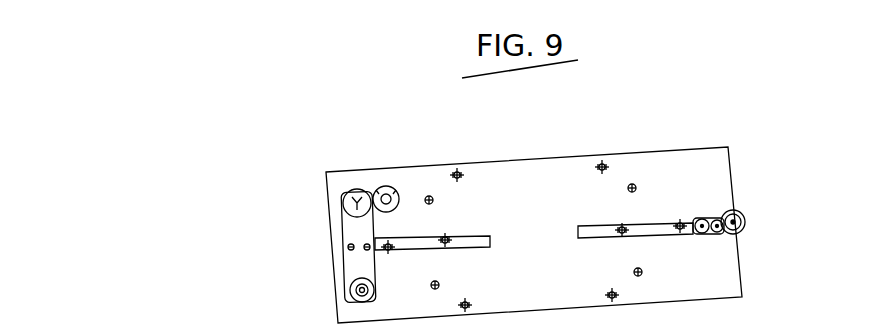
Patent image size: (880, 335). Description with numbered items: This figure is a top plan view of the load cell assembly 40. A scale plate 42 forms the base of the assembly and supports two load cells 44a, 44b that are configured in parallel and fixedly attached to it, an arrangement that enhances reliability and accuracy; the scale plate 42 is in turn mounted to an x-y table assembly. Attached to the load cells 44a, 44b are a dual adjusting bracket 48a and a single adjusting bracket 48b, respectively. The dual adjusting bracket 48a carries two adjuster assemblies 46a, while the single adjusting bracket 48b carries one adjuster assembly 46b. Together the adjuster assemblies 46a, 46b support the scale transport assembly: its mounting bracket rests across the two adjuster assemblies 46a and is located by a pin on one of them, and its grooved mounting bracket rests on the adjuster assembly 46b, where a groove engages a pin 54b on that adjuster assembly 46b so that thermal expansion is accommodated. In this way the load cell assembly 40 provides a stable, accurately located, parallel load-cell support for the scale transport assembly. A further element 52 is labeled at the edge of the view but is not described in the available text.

The load cell assembly 40 is at (772, 146).
The scale plate 42 is at (657, 168).
The load cell 44a is at (422, 238).
The load cell 44b is at (647, 225).
The adjuster assemblies 46a is at (358, 197).
The adjuster assembly 46b is at (753, 215).
The dual adjusting bracket 48a is at (350, 268).
The single adjusting bracket 48b is at (710, 238).
The pin 54b is at (791, 326).
The frame member 52 is at (862, 328).